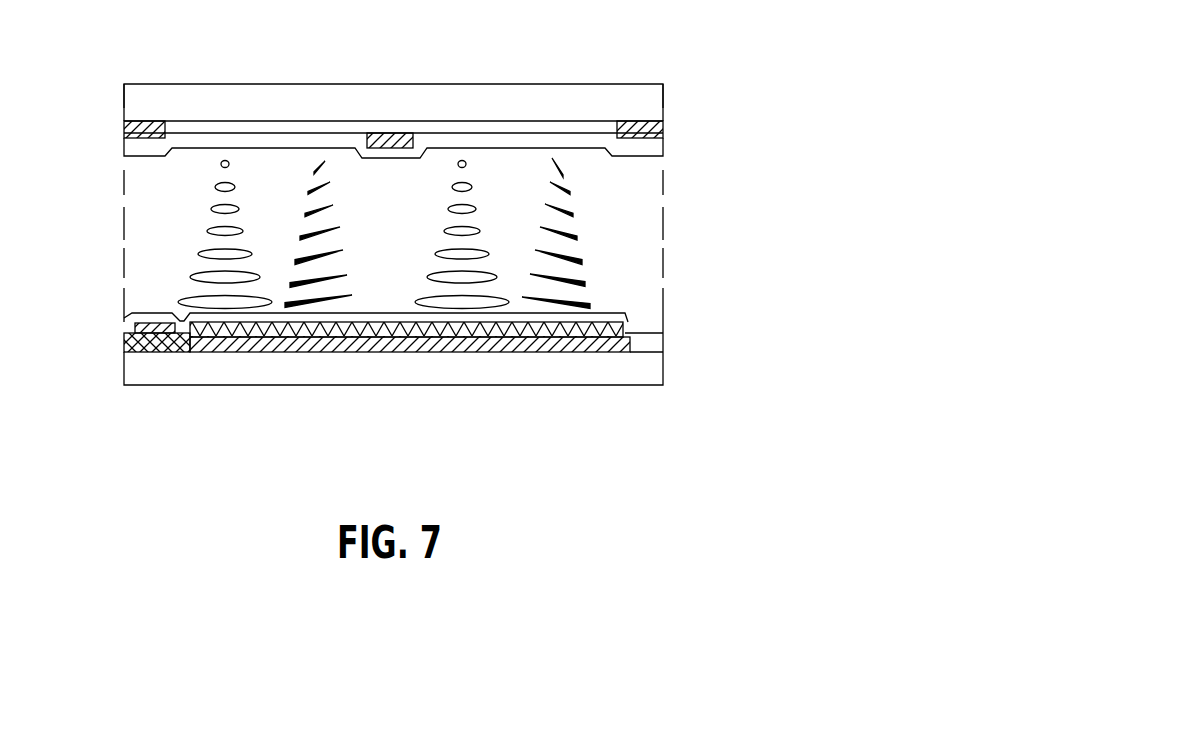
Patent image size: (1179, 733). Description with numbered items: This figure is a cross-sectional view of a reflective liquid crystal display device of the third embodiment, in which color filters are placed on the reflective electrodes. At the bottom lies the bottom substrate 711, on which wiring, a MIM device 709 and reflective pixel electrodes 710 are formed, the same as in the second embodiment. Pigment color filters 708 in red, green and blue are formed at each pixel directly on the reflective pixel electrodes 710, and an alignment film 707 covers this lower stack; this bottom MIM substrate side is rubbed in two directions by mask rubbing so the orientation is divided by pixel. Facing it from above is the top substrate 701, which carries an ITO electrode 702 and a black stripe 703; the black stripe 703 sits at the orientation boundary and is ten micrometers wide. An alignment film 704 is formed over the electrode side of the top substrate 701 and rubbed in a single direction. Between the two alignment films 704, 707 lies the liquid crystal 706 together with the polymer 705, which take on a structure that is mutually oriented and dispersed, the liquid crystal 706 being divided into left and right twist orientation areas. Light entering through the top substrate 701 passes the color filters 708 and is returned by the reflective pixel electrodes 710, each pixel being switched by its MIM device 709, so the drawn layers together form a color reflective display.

The top substrate 701 is at (535, 102).
The ITO electrode 702 is at (580, 130).
The black stripe 703 is at (663, 127).
The alignment film 704 is at (597, 143).
The polymer 705 is at (477, 250).
The liquid crystal 706 is at (572, 280).
The alignment film 707 is at (627, 313).
The color filters 708 is at (603, 330).
The MIM device 709 is at (142, 337).
The reflective pixel electrodes 710 is at (592, 348).
The bottom substrate 711 is at (570, 372).